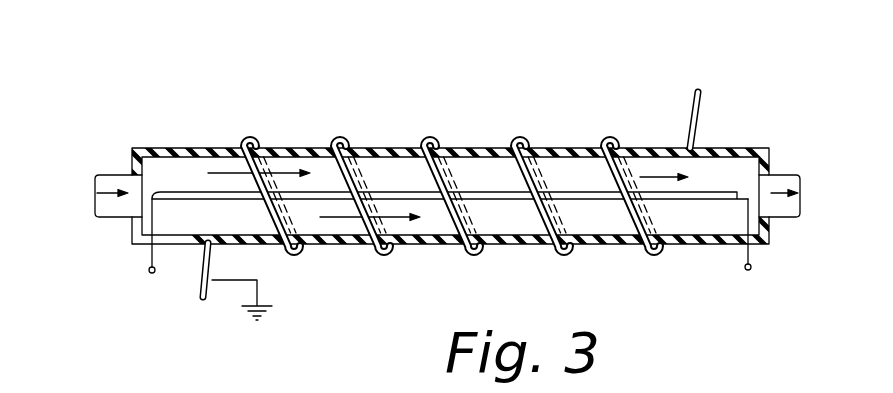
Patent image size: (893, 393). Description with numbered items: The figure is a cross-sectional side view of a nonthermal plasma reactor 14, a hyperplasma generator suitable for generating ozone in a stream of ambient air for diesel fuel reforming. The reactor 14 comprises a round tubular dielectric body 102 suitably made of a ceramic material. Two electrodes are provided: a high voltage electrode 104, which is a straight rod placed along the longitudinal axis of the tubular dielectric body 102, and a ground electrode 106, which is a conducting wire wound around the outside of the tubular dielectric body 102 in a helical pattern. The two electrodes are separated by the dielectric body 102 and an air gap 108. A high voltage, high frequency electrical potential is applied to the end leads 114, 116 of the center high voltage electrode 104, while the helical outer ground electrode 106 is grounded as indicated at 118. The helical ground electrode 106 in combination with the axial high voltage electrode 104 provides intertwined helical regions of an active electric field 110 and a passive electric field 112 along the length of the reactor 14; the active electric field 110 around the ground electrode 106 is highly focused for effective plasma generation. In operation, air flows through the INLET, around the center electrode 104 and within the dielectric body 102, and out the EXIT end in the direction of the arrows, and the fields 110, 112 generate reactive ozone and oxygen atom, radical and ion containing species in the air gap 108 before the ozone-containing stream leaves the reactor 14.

The nonthermal plasma reactor 14 is at (488, 102).
The tubular dielectric body 102 is at (398, 148).
The high voltage electrode 104 is at (174, 192).
The ground electrode 106 is at (343, 142).
The air gap 108 is at (732, 170).
The active electric field 110 is at (355, 172).
The passive electric field 112 is at (565, 167).
The end lead 114 is at (148, 270).
The end lead 116 is at (752, 267).
The ground connection 118 is at (262, 298).